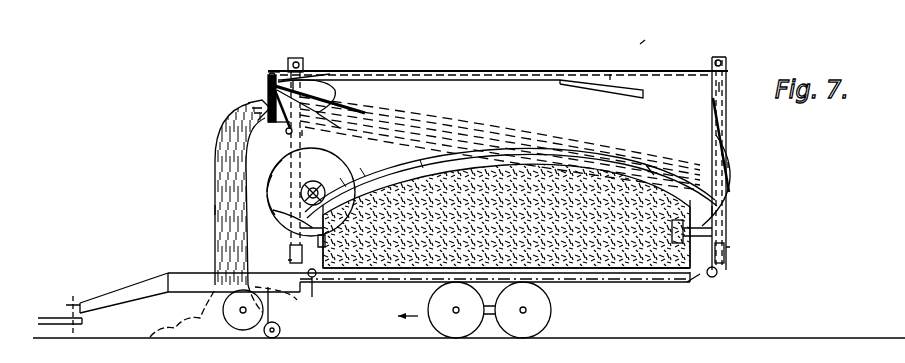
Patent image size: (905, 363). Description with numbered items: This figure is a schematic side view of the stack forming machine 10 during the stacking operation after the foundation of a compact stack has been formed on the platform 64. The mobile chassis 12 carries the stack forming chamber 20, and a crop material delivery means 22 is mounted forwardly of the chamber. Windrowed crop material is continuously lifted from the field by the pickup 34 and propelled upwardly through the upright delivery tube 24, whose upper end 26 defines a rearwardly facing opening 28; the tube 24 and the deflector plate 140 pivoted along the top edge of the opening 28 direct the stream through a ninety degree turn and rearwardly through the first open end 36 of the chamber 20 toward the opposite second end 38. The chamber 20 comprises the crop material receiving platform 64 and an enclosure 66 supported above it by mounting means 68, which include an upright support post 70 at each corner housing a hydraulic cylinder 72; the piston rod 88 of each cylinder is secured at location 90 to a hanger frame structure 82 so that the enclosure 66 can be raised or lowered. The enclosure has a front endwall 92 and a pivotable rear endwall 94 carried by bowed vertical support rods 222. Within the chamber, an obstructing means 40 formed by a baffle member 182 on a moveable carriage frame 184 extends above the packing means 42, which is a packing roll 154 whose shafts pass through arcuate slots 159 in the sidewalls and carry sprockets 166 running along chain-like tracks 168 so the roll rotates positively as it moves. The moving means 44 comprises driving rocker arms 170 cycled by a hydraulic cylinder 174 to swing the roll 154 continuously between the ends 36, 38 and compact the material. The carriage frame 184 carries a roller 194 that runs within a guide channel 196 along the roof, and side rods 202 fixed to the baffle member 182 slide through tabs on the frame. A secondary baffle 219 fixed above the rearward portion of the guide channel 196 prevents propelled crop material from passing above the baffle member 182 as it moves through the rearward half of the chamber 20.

The machine 10 is at (638, 38).
The mobile chassis 12 is at (575, 299).
The stack forming chamber 20 is at (625, 137).
The crop material delivery means 22 is at (210, 210).
The upright delivery tube 24 is at (267, 191).
The upper end of delivery tube 26 is at (240, 114).
The tube opening 28 is at (287, 133).
The pickup 34 is at (267, 312).
The first open end of chamber 36 is at (275, 152).
The second end of chamber 38 is at (735, 151).
The obstructing means 40 is at (358, 96).
The packing means 42 is at (268, 177).
The moving means 44 is at (397, 236).
The crop material receiving platform 64 is at (352, 262).
The enclosure 66 is at (607, 72).
The mounting means 68 is at (290, 259).
The upright support post 70 is at (292, 250).
The hydraulic cylinder 72 is at (302, 133).
The hanger frame structure 82 is at (300, 58).
The piston rod 88 is at (328, 68).
The piston rod securing location 90 is at (304, 70).
The front endwall 92 is at (285, 214).
The rear endwall 94 is at (703, 231).
The deflector plate 140 is at (262, 100).
The packing roll 154 is at (267, 194).
The arcuate slot 159 is at (650, 168).
The sprocket 166 is at (318, 180).
The chain-like track 168 is at (716, 214).
The driving rocker arm 170 is at (338, 190).
The hydraulic cylinder 174 is at (623, 267).
The baffle member 182 is at (283, 80).
The carriage frame 184 is at (268, 82).
The roller 194 is at (269, 72).
The guide channel 196 is at (478, 86).
The side rod 202 is at (318, 113).
The secondary baffle 219 is at (612, 70).
The vertical support rod 222 is at (738, 189).